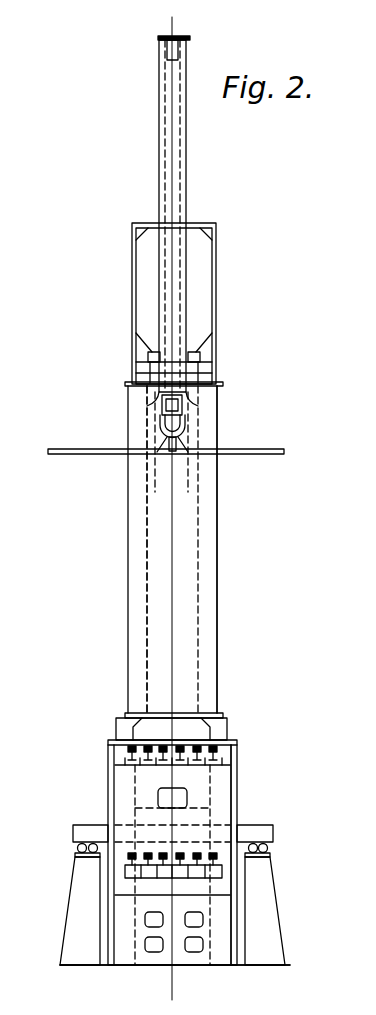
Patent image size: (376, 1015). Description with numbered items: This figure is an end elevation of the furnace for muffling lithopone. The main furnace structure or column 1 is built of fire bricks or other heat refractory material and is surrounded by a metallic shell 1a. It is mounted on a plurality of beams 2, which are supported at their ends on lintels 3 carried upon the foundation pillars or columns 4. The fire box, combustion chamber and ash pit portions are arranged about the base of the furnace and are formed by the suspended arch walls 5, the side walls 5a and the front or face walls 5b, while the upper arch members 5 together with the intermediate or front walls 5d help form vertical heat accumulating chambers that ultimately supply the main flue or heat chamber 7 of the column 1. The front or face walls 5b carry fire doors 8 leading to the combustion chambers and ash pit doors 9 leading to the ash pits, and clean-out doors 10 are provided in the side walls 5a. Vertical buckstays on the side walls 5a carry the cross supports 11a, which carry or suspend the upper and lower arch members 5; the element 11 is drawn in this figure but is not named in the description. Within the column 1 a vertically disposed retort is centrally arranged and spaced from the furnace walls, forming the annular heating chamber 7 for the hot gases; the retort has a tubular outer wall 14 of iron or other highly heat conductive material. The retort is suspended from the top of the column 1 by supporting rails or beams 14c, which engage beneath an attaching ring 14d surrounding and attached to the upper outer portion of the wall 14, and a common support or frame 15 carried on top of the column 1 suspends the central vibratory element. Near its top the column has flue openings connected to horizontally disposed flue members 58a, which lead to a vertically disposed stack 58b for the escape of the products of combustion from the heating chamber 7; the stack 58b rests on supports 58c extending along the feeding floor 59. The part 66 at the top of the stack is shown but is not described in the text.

The furnace structure or column 1 is at (205, 548).
The metallic shell 1a is at (218, 507).
The beams 2 is at (262, 834).
The lintels 3 is at (78, 855).
The foundation pillars or columns 4 is at (176, 21).
The suspended arch walls 5 is at (130, 766).
The side walls 5a is at (304, 903).
The front or face walls 5b is at (185, 962).
The intermediate or front walls 5d is at (218, 787).
The main flue or heat chamber 7 is at (196, 467).
The fire doors 8 is at (140, 924).
The ash pit doors 9 is at (145, 948).
The clean-out doors 10 is at (178, 798).
The housing 11 is at (108, 795).
The cross supports 11a is at (188, 745).
The outer wall of retort 14 is at (192, 483).
The supporting rails or beams 14c is at (200, 379).
The attaching ring 14d is at (150, 372).
The support or frame 15 is at (216, 266).
The flue members 58a is at (185, 425).
The stacks 58b is at (159, 115).
The supports 58c is at (258, 437).
The feeding floor 59 is at (72, 449).
The cap 66 is at (190, 37).